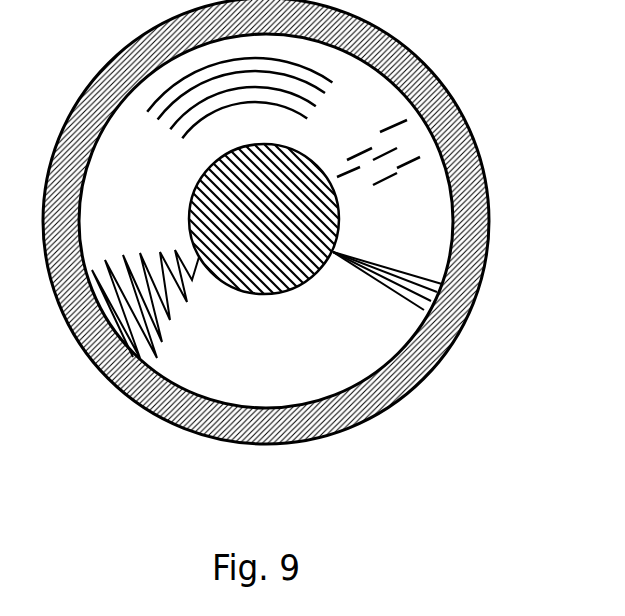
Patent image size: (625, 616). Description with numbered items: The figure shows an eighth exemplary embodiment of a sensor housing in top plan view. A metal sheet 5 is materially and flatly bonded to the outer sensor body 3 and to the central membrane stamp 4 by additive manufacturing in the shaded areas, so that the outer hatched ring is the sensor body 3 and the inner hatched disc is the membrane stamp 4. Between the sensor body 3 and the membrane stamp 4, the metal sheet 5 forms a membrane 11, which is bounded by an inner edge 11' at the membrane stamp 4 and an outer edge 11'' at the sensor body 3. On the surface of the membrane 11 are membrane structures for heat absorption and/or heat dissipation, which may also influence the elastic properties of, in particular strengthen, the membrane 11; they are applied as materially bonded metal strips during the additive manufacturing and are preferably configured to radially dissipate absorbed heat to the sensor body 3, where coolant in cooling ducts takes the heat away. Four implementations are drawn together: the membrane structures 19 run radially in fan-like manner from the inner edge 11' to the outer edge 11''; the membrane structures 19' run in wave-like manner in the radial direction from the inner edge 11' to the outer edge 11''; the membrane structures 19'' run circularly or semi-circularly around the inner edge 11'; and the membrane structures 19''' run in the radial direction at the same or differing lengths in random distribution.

The sensor body 3 is at (466, 105).
The membrane stamp 4 is at (196, 188).
The metal sheet 5 is at (452, 213).
The membrane 11 is at (337, 317).
The inner edge of the membrane 11' is at (246, 327).
The outer edge of the membrane 11'' is at (297, 371).
The membrane structures 19 is at (387, 266).
The membrane structures 19' is at (161, 304).
The membrane structures 19'' is at (215, 123).
The membrane structures 19''' is at (378, 136).